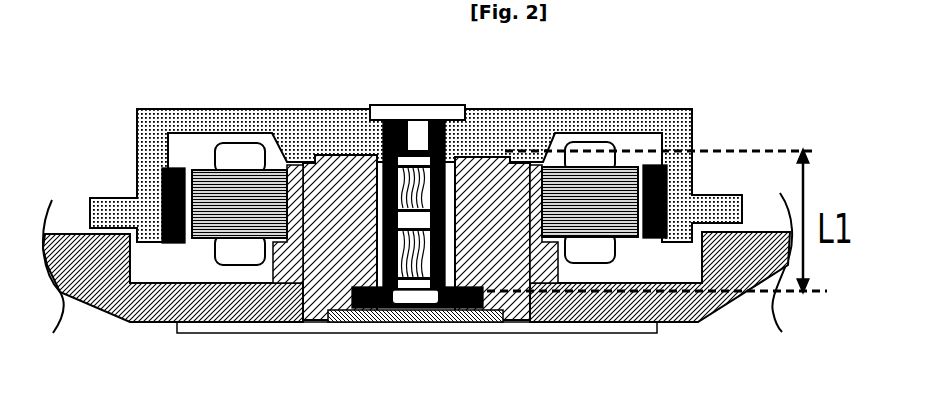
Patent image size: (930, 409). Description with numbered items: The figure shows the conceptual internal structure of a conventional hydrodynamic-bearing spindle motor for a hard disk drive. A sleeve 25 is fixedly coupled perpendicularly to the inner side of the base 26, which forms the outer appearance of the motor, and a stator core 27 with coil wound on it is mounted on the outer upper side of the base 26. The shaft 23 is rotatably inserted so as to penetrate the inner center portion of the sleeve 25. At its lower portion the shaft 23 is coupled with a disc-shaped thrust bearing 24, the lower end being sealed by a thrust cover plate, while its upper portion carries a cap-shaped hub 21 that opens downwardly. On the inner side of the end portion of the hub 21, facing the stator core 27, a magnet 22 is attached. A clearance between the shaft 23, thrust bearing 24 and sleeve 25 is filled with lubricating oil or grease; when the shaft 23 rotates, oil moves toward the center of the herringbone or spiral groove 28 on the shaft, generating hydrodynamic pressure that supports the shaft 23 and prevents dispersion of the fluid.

The hub 21 is at (150, 127).
The magnet 22 is at (655, 168).
The shaft 23 is at (410, 140).
The thrust bearing 24 is at (405, 300).
The sleeve 25 is at (333, 160).
The base 26 is at (670, 300).
The stator core 27 is at (247, 213).
The groove 28 is at (455, 265).